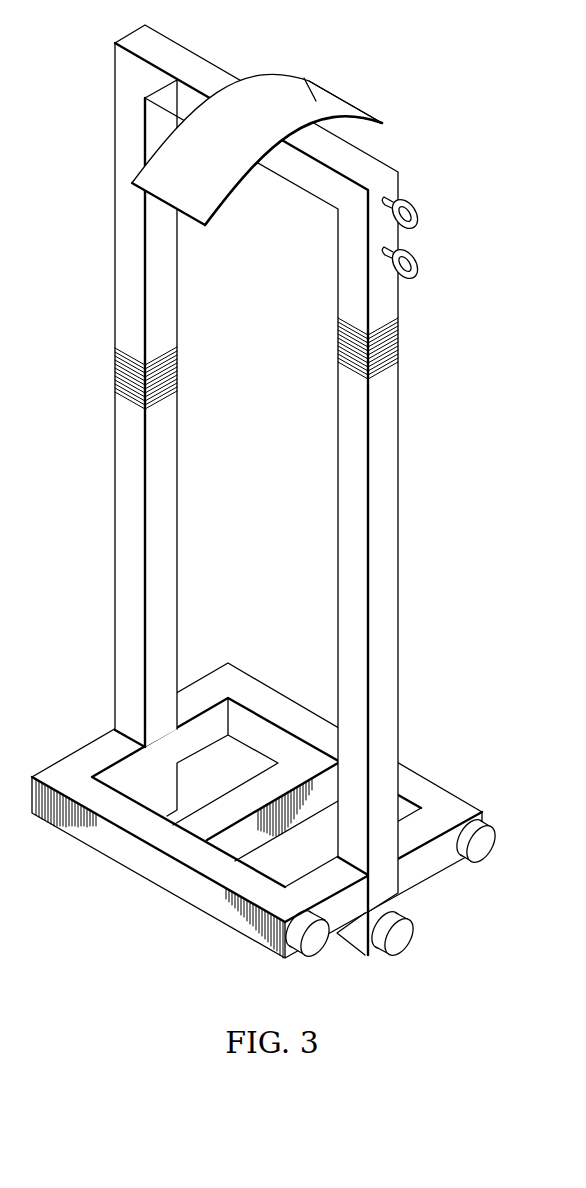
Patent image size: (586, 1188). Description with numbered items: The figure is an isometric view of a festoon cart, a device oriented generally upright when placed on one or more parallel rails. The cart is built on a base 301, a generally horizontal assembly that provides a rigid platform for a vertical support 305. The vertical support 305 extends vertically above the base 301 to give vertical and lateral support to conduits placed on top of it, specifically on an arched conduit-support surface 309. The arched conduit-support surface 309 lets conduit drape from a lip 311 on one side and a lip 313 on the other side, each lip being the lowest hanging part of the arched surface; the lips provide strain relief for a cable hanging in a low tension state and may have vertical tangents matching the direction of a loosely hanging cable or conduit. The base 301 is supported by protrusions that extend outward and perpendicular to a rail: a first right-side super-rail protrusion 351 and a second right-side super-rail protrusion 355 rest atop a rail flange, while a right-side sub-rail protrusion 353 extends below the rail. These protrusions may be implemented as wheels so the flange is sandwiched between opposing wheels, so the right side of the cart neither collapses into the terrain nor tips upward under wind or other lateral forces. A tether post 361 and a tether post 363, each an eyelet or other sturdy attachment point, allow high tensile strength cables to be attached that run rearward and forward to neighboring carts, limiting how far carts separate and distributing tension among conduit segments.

The base 301 is at (270, 968).
The vertical support 305 is at (95, 42).
The arched conduit-support surface 309 is at (253, 92).
The lip 311 is at (189, 210).
The lip 313 is at (337, 96).
The first right-side super-rail protrusion 351 is at (321, 942).
The right-side sub-rail protrusion 353 is at (404, 940).
The second right-side super-rail protrusion 355 is at (487, 850).
The tether post 361 is at (421, 215).
The tether post 363 is at (421, 265).